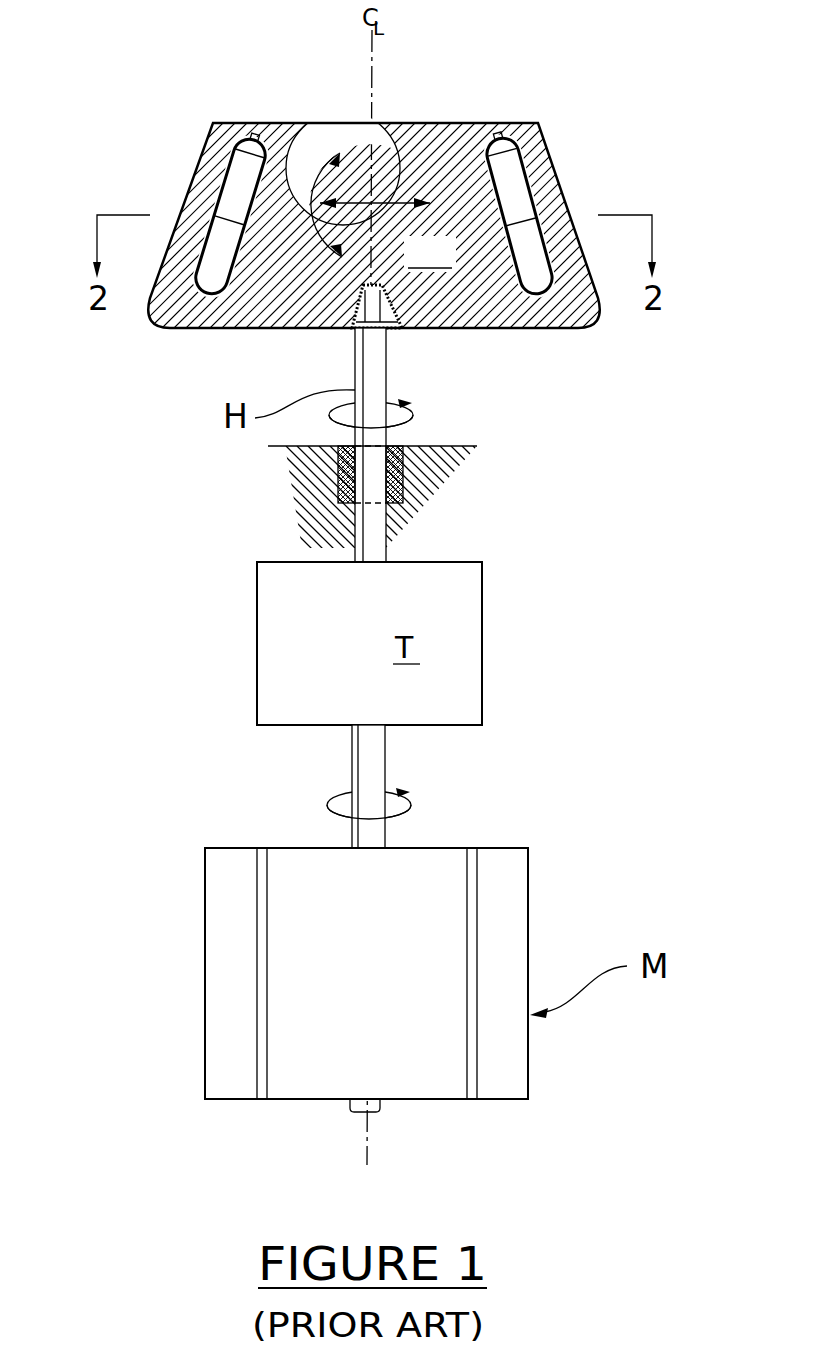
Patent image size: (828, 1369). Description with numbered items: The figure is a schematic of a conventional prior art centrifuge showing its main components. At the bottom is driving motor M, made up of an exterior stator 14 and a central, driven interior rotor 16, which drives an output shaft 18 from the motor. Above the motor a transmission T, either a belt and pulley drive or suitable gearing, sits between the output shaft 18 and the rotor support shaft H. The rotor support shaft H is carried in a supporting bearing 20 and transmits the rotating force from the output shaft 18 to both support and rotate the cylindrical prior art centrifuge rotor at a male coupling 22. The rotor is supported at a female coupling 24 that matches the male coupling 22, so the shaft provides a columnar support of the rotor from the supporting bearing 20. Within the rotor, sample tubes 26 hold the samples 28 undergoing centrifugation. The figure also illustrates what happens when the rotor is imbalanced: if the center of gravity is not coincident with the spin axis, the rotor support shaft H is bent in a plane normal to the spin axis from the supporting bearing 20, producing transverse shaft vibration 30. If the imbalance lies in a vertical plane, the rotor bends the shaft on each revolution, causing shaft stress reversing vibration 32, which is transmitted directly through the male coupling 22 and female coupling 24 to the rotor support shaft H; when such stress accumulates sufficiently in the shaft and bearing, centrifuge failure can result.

The exterior stator 14 is at (518, 930).
The interior rotor 16 is at (413, 1003).
The output shaft 18 is at (385, 750).
The supporting bearing 20 is at (405, 468).
The male coupling 22 is at (398, 330).
The female coupling 24 is at (357, 330).
The sample tubes 26 is at (252, 130).
The samples 28 is at (208, 278).
The transverse shaft vibration 30 is at (385, 123).
The shaft stress reversing vibration 32 is at (310, 123).